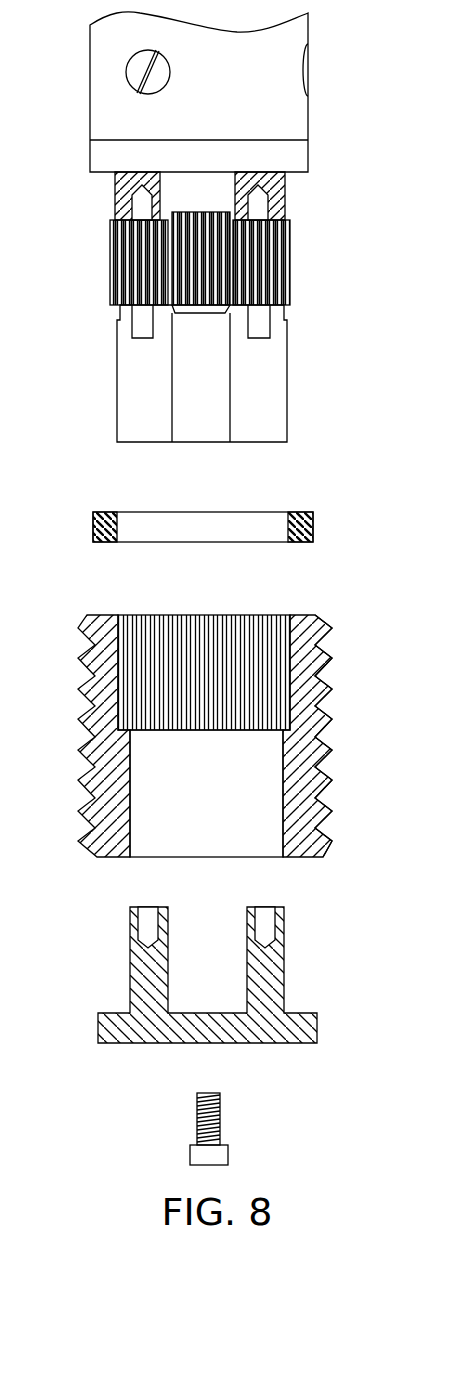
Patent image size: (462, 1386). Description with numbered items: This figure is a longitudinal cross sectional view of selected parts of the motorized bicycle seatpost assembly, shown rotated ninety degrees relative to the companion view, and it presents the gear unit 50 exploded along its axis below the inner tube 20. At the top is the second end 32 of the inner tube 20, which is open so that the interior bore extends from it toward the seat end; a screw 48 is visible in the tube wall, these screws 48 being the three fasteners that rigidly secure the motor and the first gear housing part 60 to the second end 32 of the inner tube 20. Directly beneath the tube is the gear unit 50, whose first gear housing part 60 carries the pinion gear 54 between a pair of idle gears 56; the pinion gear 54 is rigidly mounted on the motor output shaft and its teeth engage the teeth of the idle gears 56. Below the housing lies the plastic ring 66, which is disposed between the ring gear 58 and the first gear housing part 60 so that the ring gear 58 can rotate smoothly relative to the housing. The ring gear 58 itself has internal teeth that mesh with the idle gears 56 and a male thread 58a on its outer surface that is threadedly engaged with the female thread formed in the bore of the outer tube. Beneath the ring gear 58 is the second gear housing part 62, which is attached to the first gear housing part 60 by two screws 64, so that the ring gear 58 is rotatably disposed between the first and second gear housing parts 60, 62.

The inner tube 20 is at (308, 40).
The screws 48 is at (303, 79).
The second end 32 is at (272, 142).
The gear unit 50 is at (86, 377).
The idle gears 56 is at (130, 250).
The pinion gear 54 is at (200, 297).
The first gear housing part 60 is at (287, 403).
The plastic ring 66 is at (298, 512).
The ring gear 58 is at (334, 691).
The male thread 58a is at (323, 792).
The second gear housing part 62 is at (317, 1028).
The screws 64 is at (198, 1122).